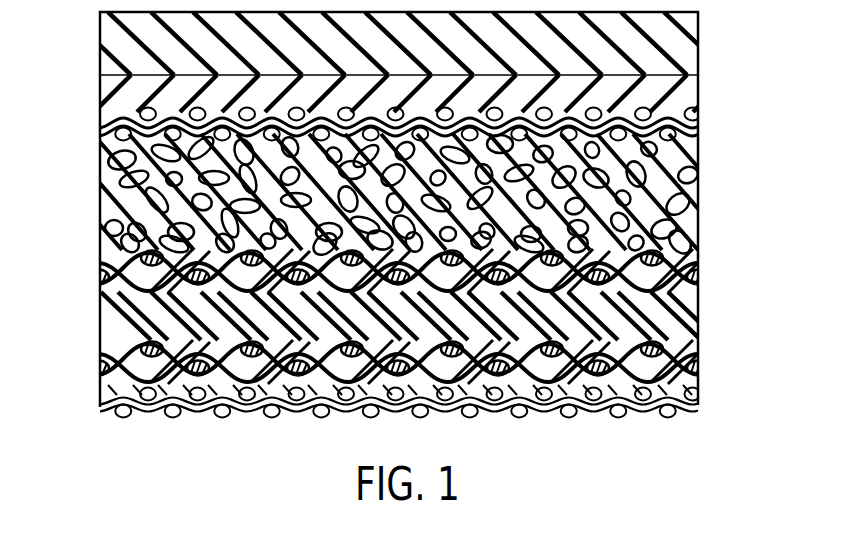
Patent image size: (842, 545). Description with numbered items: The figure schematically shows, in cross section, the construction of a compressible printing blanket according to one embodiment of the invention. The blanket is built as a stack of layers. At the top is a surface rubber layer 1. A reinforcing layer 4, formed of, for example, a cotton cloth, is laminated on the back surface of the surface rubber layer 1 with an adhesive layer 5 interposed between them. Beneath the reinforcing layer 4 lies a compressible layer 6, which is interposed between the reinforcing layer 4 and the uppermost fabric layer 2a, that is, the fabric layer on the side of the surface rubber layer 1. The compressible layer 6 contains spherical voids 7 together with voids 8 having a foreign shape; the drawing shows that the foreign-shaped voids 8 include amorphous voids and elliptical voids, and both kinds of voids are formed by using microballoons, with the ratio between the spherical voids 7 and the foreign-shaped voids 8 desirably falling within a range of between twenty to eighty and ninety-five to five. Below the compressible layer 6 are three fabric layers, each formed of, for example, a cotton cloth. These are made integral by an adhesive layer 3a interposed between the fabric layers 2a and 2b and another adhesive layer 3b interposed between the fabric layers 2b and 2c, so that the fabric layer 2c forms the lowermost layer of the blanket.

The surface rubber layer 1 is at (683, 52).
The adhesive layer 5 is at (683, 90).
The reinforcing layer 4 is at (683, 123).
The compressible layer 6 is at (683, 188).
The foreign-shaped voids 8 is at (100, 160).
The spherical voids 7 is at (100, 228).
The fabric layer 2a is at (698, 265).
The adhesive layer 3a is at (683, 312).
The fabric layer 2b is at (698, 350).
The adhesive layer 3b is at (698, 377).
The fabric layer 2c is at (698, 403).